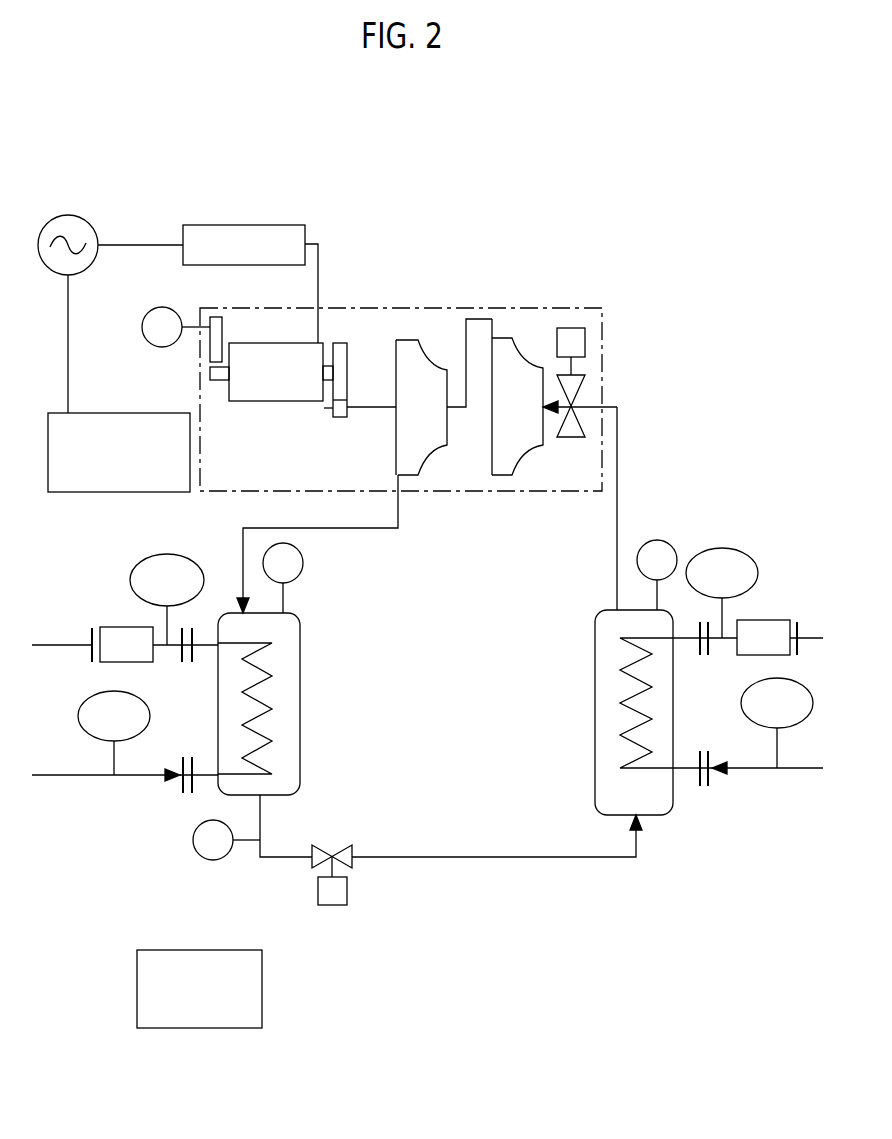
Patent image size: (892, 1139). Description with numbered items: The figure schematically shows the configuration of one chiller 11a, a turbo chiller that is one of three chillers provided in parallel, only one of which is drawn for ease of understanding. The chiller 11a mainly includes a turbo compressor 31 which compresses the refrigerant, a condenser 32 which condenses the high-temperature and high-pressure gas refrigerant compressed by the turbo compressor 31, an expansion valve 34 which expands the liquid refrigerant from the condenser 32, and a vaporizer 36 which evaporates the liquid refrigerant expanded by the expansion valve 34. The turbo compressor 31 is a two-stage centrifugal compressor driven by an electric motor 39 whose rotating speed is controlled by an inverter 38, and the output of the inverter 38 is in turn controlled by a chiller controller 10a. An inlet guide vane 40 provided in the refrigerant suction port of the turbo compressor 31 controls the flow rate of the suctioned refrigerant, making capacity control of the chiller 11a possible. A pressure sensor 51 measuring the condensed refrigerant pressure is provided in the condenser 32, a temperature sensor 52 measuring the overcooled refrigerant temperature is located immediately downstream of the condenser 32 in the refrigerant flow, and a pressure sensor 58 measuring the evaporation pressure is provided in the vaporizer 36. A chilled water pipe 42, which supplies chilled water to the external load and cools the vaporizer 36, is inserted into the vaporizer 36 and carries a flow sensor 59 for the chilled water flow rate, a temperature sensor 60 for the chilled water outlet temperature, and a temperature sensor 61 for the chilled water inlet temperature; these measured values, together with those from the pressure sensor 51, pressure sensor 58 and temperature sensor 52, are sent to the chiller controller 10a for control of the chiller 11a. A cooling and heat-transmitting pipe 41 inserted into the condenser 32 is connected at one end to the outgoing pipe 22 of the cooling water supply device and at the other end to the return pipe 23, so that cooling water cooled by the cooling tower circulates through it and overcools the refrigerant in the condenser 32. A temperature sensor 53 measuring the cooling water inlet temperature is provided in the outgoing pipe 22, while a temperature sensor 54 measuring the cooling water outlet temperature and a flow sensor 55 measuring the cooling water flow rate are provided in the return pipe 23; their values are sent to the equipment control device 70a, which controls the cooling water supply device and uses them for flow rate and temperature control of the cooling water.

The chiller 11a is at (130, 150).
The inverter 38 is at (238, 225).
The electric motor 39 is at (270, 343).
The turbo compressor 31 is at (635, 292).
The inlet guide vane 40 is at (575, 437).
The chiller controller 10a is at (112, 492).
The condenser 32 is at (226, 612).
The cooling and heat-transmitting pipe 41 is at (263, 697).
The pressure sensor 51 is at (303, 563).
The return pipe 23 is at (62, 645).
The flow sensor 55 is at (143, 662).
The temperature sensor 54 is at (165, 554).
The outgoing pipe 22 is at (78, 777).
The temperature sensor 53 is at (83, 700).
The temperature sensor 52 is at (213, 860).
The expansion valve 34 is at (355, 860).
The equipment control device 70a is at (200, 1028).
The vaporizer 36 is at (600, 608).
The chilled water pipe 42 is at (620, 670).
The pressure sensor 58 is at (656, 540).
The temperature sensor 60 is at (722, 548).
The flow sensor 59 is at (773, 620).
The temperature sensor 61 is at (741, 703).